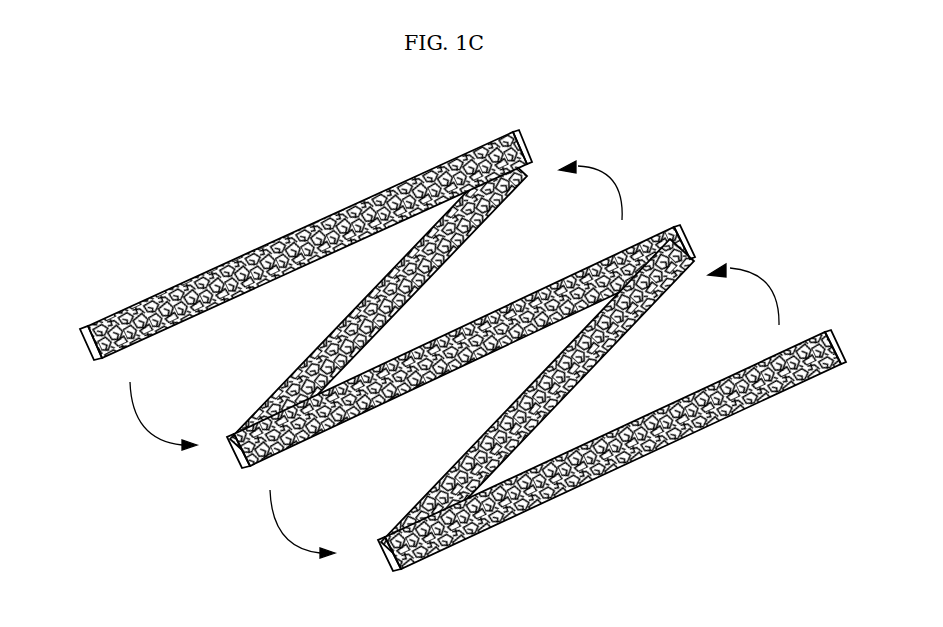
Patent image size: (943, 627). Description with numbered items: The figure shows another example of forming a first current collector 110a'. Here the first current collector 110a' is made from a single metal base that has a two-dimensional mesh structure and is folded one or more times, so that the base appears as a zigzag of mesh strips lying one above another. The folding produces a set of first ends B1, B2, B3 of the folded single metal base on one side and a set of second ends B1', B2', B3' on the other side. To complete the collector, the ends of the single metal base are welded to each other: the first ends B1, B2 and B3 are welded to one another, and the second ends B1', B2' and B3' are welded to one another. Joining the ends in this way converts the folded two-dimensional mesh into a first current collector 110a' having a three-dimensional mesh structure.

The first current collector 110a' is at (464, 344).
The first end of the folded single metal base B3 is at (272, 256).
The second end of the folded single metal base B3' is at (567, 172).
The first end of the folded single metal base B2 is at (426, 321).
The second end of the folded single metal base B2' is at (726, 275).
The first end of the folded single metal base B1 is at (579, 418).
The second end of the folded single metal base B1' is at (868, 343).